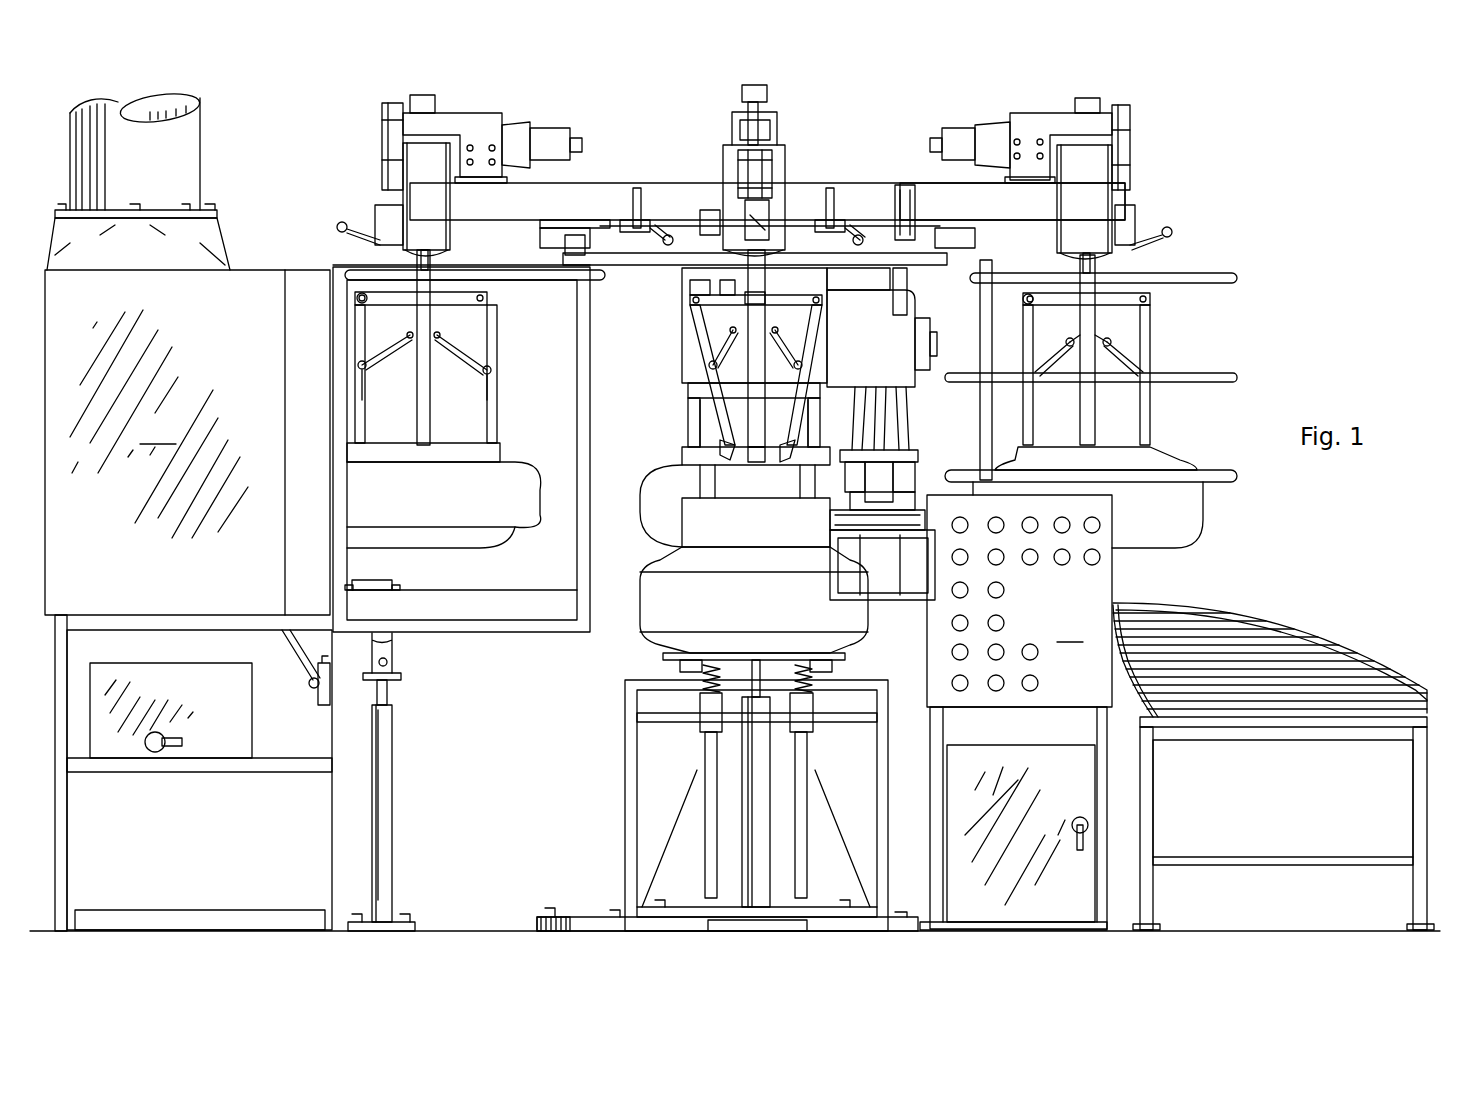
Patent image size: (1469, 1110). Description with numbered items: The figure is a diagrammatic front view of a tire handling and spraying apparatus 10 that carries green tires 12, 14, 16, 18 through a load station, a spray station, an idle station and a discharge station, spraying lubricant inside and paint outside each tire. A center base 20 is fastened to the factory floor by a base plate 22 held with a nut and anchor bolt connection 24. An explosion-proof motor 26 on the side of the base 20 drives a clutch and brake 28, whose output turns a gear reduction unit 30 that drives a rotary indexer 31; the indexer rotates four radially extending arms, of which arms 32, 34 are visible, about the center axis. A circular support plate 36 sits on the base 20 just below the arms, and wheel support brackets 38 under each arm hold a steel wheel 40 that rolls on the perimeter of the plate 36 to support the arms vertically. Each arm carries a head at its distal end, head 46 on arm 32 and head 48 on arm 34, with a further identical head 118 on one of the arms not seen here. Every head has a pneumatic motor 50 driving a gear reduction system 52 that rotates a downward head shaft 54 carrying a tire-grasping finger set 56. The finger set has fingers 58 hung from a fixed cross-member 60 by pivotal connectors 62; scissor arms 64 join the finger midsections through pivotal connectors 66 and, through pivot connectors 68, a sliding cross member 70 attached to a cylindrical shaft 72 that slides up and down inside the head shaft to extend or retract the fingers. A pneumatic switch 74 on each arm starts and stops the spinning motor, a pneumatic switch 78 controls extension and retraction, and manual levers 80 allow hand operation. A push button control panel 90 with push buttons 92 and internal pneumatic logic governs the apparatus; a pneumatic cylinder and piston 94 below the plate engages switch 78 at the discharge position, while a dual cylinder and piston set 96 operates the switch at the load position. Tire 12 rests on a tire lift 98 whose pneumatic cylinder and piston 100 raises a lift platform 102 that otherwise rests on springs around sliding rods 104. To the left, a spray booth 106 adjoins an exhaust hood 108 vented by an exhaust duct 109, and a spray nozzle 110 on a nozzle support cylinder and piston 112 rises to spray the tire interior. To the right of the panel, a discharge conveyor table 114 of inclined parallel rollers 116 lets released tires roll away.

The tire handling and spraying apparatus 10 is at (1262, 120).
The tire 12 is at (652, 628).
The tire 14 is at (518, 467).
The tire 16 is at (640, 498).
The tire 18 is at (1203, 515).
The center base 20 is at (696, 392).
The base plate 22 is at (605, 917).
The nut and anchor bolt connection 24 is at (550, 908).
The explosion-proof motor 26 is at (905, 600).
The clutch and brake 28 is at (918, 460).
The gear reduction unit 30 is at (912, 300).
The rotary indexer 31 is at (680, 335).
The radially extending arm 32 is at (560, 183).
The radially extending arm 34 is at (950, 190).
The circular support plate 36 is at (612, 265).
The wheel support bracket 38 is at (560, 245).
The steel wheel 40 is at (575, 230).
The head 46 is at (372, 140).
The head 48 is at (1155, 138).
The pneumatic motor 50 is at (550, 150).
The gear reduction system 52 is at (470, 112).
The head shaft 54 is at (430, 262).
The tire-grasping finger set 56 is at (500, 410).
The fingers 58 is at (492, 336).
The fixed cross-member 60 is at (470, 298).
The pivotal connector 62 is at (358, 296).
The scissor arms 64 is at (470, 355).
The pivotal connectors 66 is at (483, 378).
The pivot connectors 68 is at (437, 338).
The sliding cross member 70 is at (405, 335).
The cylindrical shaft 72 is at (1095, 318).
The pneumatic switch 74 is at (640, 210).
The pneumatic switch 78 is at (715, 210).
The manual levers 80 is at (340, 222).
The push button control panel 90 is at (1016, 712).
The push buttons 92 is at (1004, 593).
The pneumatic cylinder and piston 94 is at (908, 285).
The dual cylinder and piston set 96 is at (690, 290).
The tire lift 98 is at (622, 772).
The pneumatic cylinder and piston 100 is at (765, 762).
The lift platform 102 is at (685, 660).
The sliding rods 104 is at (700, 676).
The spray booth 106 is at (455, 636).
The exhaust hood 108 is at (188, 567).
The exhaust duct 109 is at (188, 150).
The spray nozzle 110 is at (385, 582).
The nozzle support cylinder and piston 112 is at (390, 688).
The discharge conveyor table 114 is at (1365, 645).
The rollers 116 is at (1295, 712).
The head 118 is at (795, 152).